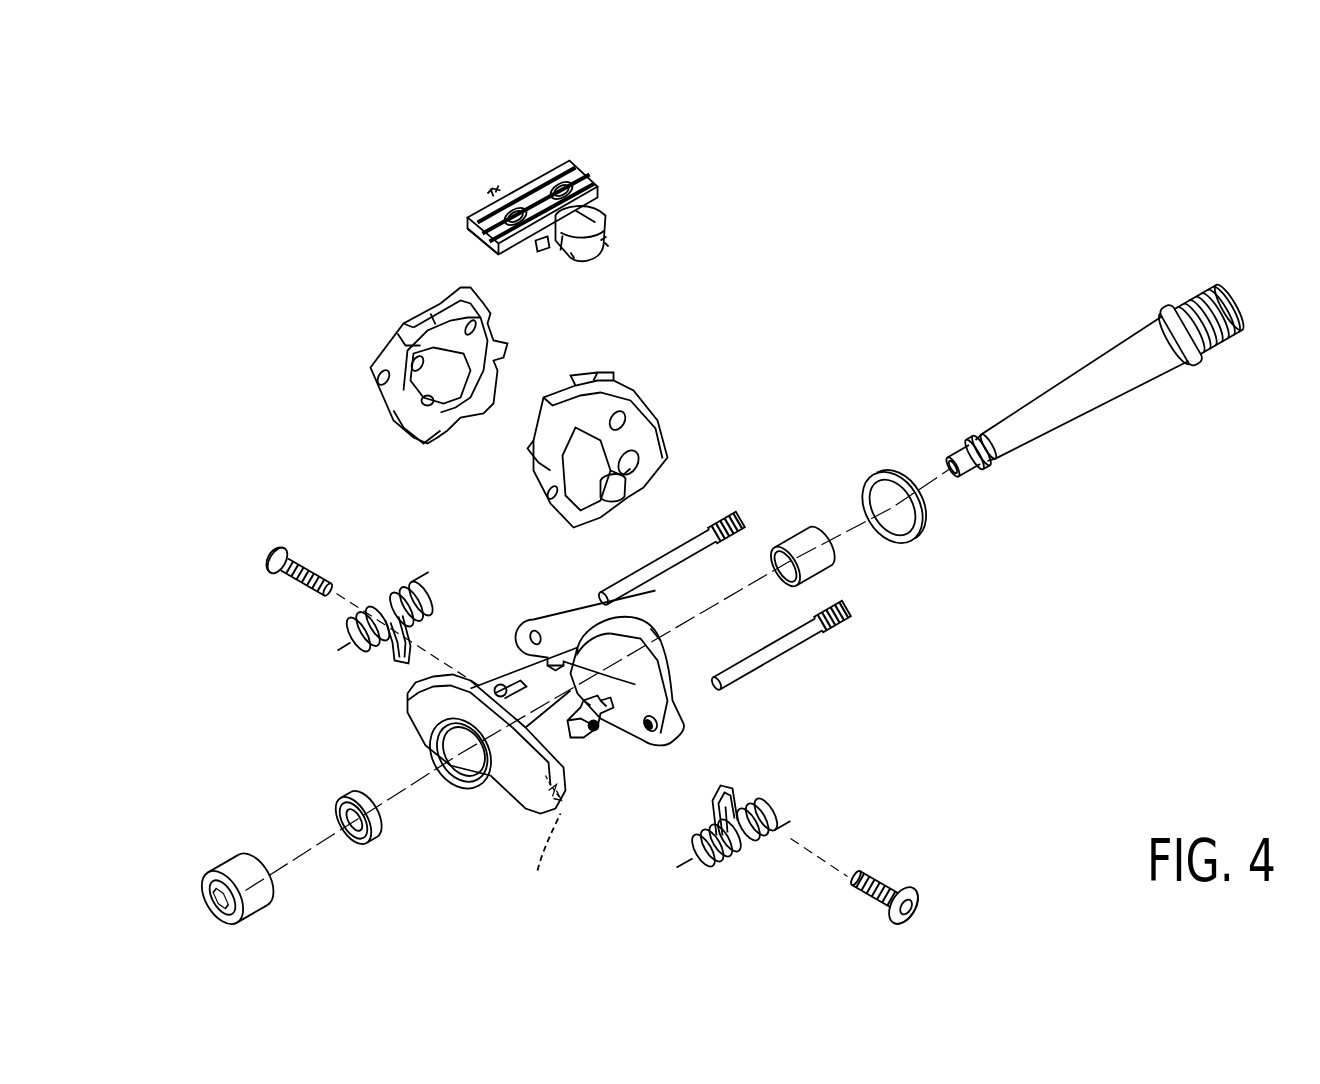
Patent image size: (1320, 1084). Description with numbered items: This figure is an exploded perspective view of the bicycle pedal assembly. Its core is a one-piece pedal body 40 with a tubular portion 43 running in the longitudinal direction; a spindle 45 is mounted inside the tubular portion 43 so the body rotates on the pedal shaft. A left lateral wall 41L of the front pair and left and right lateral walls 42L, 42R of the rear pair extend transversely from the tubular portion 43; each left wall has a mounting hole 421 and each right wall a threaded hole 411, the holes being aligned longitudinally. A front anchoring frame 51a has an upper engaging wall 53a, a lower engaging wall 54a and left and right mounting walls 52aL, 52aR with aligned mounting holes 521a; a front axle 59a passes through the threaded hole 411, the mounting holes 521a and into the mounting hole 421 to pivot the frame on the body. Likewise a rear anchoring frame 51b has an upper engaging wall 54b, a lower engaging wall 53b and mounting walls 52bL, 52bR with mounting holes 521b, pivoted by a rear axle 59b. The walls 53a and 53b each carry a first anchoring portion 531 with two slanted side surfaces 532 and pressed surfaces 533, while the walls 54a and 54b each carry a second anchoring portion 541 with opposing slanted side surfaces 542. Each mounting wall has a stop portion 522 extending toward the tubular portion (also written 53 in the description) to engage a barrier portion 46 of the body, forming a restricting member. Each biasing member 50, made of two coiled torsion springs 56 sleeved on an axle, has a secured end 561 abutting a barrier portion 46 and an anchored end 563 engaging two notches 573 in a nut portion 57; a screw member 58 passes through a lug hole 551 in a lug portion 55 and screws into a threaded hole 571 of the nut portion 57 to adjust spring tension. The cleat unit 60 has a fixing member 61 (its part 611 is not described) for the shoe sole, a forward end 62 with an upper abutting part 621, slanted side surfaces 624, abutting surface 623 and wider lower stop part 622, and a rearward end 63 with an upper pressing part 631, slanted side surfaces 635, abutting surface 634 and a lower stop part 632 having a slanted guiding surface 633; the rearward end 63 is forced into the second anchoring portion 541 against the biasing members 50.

The one-piece pedal body 40 is at (575, 747).
The left lateral wall of the front pair 41L is at (439, 762).
The left lateral wall of the rear pair 42L is at (515, 818).
The right lateral wall of the rear pair 42R is at (684, 695).
The tubular portion 43 is at (462, 762).
The spindle 45 is at (1123, 392).
The barrier portion 46 is at (600, 620).
The threaded hole 411 is at (657, 726).
The mounting hole 421 is at (540, 812).
The biasing member 50 is at (631, 706).
The front anchoring frame 51a is at (426, 362).
The rear anchoring frame 51b is at (618, 443).
The left mounting wall of the front anchoring frame 52aL is at (378, 403).
The right mounting wall of the front anchoring frame 52aR is at (387, 403).
The left mounting wall of the rear anchoring frame 52bL is at (548, 503).
The right mounting wall of the rear anchoring frame 52bR is at (664, 418).
The mounting holes of the front anchoring frame 521a is at (380, 353).
The mounting holes of the rear anchoring frame 521b is at (550, 520).
The stop portion 522 is at (416, 440).
The tubular portion 53 is at (620, 497).
The upper engaging wall of the front anchoring frame 53a is at (437, 290).
The lower engaging wall of the rear anchoring frame 53b is at (648, 518).
The first anchoring portion 531 is at (440, 318).
The slanted side surfaces of the first anchoring portion 532 is at (432, 315).
The pressed surfaces 533 is at (404, 331).
The lower engaging wall of the front anchoring frame 54a is at (516, 563).
The upper engaging wall of the rear anchoring frame 54b is at (614, 392).
The second anchoring portion 541 is at (437, 415).
The slanted side surfaces of the second anchoring portion 542 is at (613, 375).
The lug portion 55 is at (642, 444).
The lug hole 551 is at (628, 472).
The coiled torsion spring 56 is at (548, 757).
The secured end 561 is at (678, 866).
The anchored end 563 is at (722, 790).
The nut portion 57 is at (494, 688).
The threaded hole of the nut portion 571 is at (655, 749).
The notches 573 is at (610, 706).
The screw member 58 is at (272, 548).
The front axle 59a is at (738, 525).
The rear axle 59b is at (806, 641).
The cleat unit 60 is at (519, 211).
The fixing member 61 is at (472, 166).
The bottom surface 611 is at (493, 190).
The forward end 62 is at (507, 187).
The upper abutting part 621 is at (502, 192).
The lower stop part of the forward end 622 is at (497, 190).
The abutting surface of the upper abutting part 623 is at (496, 192).
The slanted side surfaces of the upper abutting part 624 is at (491, 188).
The rearward end 63 is at (570, 238).
The upper pressing part 631 is at (584, 224).
The lower stop part of the rearward end 632 is at (604, 237).
The slanted guiding surface 633 is at (573, 256).
The abutting surface of the upper pressing part 634 is at (607, 244).
The slanted side surfaces of the upper pressing part 635 is at (546, 250).